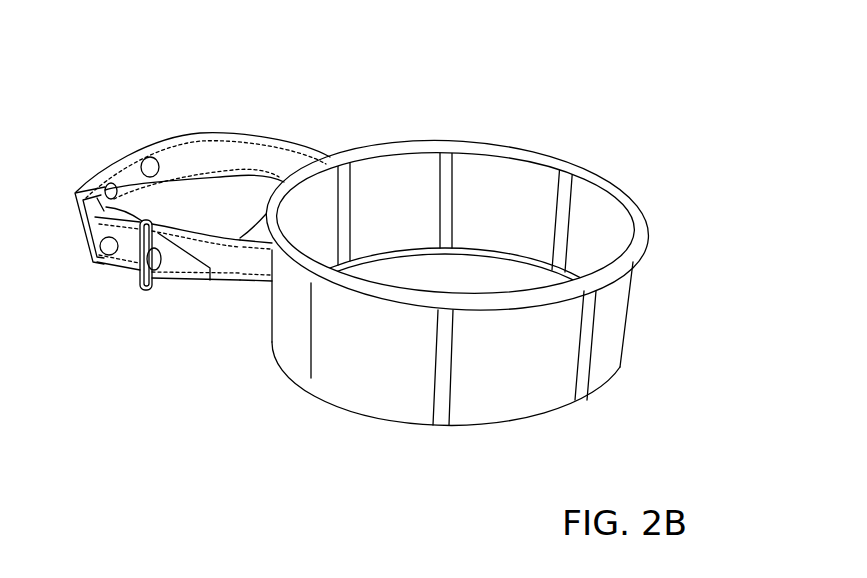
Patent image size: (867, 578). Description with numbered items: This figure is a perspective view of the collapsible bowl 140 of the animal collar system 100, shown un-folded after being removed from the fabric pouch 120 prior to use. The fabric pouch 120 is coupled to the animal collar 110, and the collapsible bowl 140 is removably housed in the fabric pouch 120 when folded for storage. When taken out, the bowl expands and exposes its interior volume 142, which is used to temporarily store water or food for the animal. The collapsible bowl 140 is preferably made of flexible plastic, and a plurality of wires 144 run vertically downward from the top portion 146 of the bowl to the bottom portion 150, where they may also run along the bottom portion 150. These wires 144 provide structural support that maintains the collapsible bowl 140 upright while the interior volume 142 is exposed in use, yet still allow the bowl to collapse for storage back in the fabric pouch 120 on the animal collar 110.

The animal collar system 100 is at (633, 117).
The animal collar 110 is at (122, 157).
The fabric pouch 120 is at (257, 267).
The collapsible bowl 140 is at (378, 375).
The interior volume 142 is at (413, 268).
The plurality of wires 144 is at (594, 348).
The top portion 146 is at (407, 142).
The bottom portion 150 is at (527, 425).